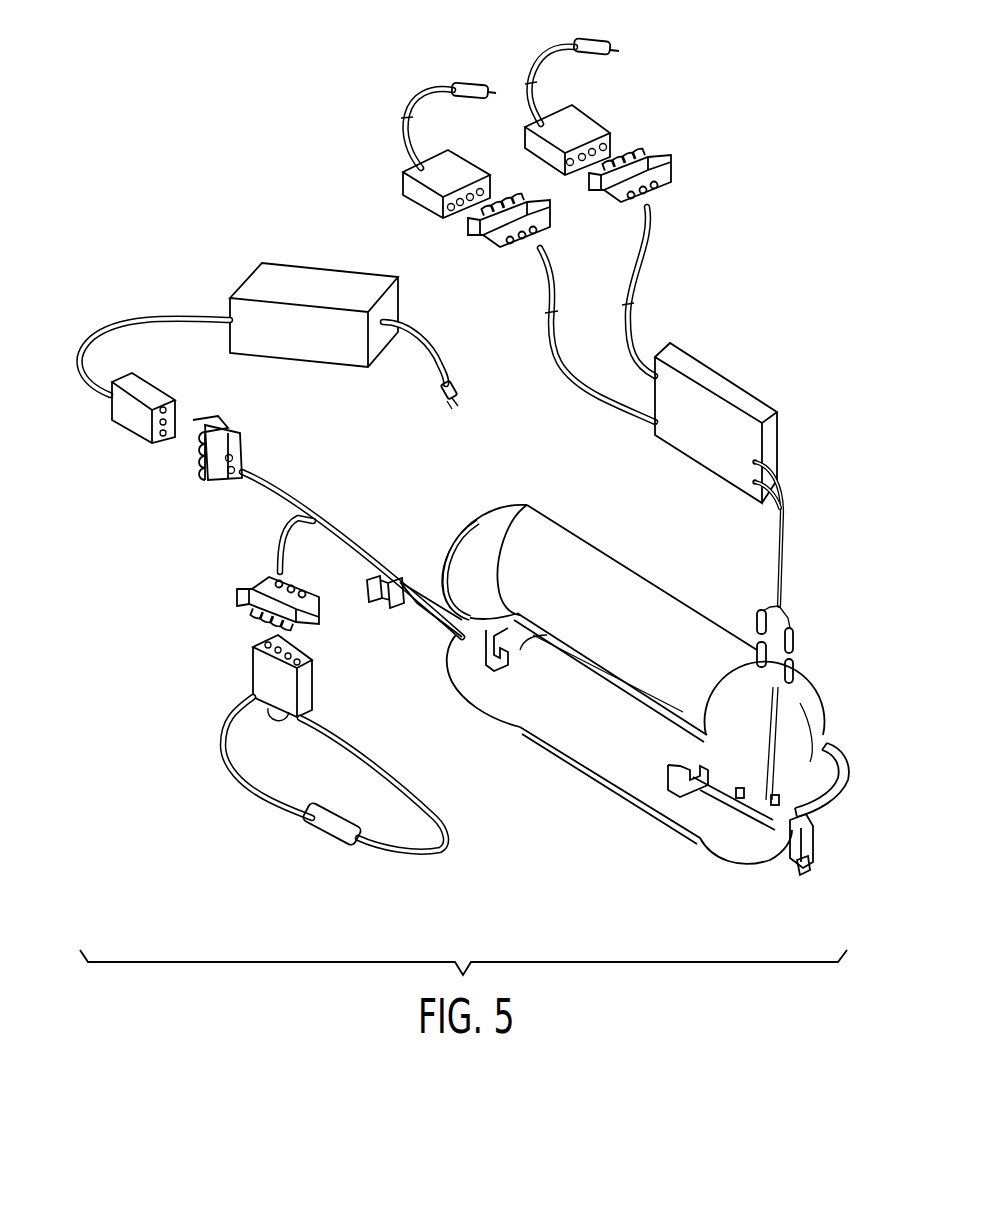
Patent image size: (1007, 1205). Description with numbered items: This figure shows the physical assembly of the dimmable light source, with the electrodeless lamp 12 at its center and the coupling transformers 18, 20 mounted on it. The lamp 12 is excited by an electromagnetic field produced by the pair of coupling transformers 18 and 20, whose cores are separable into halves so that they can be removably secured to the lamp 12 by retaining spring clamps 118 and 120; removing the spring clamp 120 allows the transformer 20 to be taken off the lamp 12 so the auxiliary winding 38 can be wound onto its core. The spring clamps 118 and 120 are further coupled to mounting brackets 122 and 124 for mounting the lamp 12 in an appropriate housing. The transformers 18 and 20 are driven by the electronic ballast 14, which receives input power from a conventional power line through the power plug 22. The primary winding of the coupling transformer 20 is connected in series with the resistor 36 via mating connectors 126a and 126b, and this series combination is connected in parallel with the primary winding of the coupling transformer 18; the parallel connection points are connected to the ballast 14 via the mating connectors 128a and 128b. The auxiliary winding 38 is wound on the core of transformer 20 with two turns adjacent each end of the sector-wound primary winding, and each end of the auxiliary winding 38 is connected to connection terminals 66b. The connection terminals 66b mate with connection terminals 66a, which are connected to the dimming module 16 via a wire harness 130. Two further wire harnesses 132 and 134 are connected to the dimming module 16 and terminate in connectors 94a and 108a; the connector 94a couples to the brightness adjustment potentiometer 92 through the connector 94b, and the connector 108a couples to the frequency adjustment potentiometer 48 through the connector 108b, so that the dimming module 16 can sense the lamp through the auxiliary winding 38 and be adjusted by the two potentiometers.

The electrodeless lamp 12 is at (592, 520).
The electronic ballast 14 is at (298, 263).
The dimming module 16 is at (740, 392).
The coupling transformer 18 is at (425, 570).
The coupling transformer 20 is at (830, 754).
The power plug 22 is at (440, 392).
The resistor 36 is at (327, 832).
The auxiliary winding 38 is at (774, 805).
The frequency adjustment potentiometer 48 is at (584, 42).
The connection terminals 66a is at (795, 644).
The connection terminals 66b is at (787, 673).
The brightness adjustment potentiometer 92 is at (466, 78).
The connector 94a is at (500, 233).
The connector 94b is at (424, 192).
The connector 108a is at (650, 167).
The connector 108b is at (590, 128).
The retaining spring clamp 118 is at (440, 570).
The retaining spring clamp 120 is at (842, 802).
The mounting bracket 122 is at (392, 608).
The mounting bracket 124 is at (800, 876).
The mating connector 126a is at (308, 617).
The mating connector 126b is at (303, 692).
The mating connector 128a is at (203, 474).
The mating connector 128b is at (125, 420).
The wire harness 130 is at (783, 568).
The wire harness 132 is at (576, 384).
The wire harness 134 is at (633, 330).